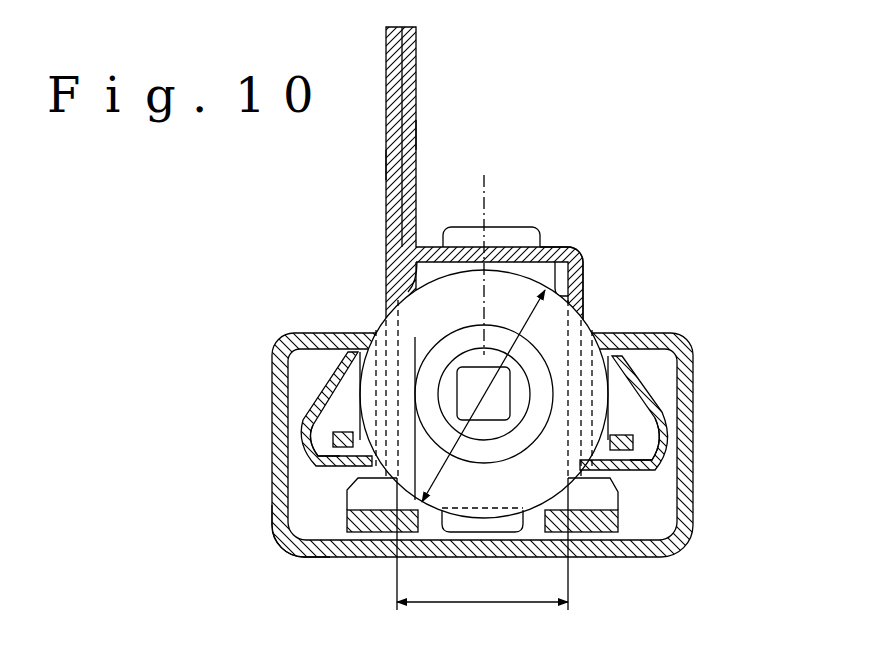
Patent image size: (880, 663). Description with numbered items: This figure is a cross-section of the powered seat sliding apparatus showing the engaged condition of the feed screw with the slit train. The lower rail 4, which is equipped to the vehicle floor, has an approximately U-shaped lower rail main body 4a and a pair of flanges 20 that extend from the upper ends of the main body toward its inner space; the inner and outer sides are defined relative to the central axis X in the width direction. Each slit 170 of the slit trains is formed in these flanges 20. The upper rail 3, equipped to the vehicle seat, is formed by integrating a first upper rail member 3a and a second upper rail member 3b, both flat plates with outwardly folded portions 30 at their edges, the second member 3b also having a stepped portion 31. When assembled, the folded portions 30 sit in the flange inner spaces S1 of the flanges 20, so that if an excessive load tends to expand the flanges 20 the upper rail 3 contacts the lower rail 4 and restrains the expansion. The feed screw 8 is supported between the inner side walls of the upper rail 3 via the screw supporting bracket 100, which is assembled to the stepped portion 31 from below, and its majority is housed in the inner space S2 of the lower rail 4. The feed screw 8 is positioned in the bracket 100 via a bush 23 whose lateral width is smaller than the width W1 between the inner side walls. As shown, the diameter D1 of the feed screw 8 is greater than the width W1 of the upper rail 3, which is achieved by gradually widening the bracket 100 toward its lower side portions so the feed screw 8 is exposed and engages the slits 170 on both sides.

The upper rail 3 is at (436, 96).
The first upper rail member 3a is at (386, 165).
The second upper rail member 3b is at (417, 134).
The lower rail 4 is at (268, 479).
The lower rail main body 4a is at (279, 504).
The feed screw 8 is at (591, 328).
The flanges 20 is at (306, 328).
The bush 23 is at (578, 248).
The folded portions 30 is at (312, 421).
The stepped portion 31 is at (562, 247).
The screw supporting bracket 100 is at (620, 507).
The slit 170 is at (359, 333).
The flange inner spaces S1 is at (345, 420).
The inner space S2 is at (459, 320).
The central axis X is at (485, 250).
The diameter of the feed screw D1 is at (442, 470).
The width of the upper rail W1 is at (482, 544).